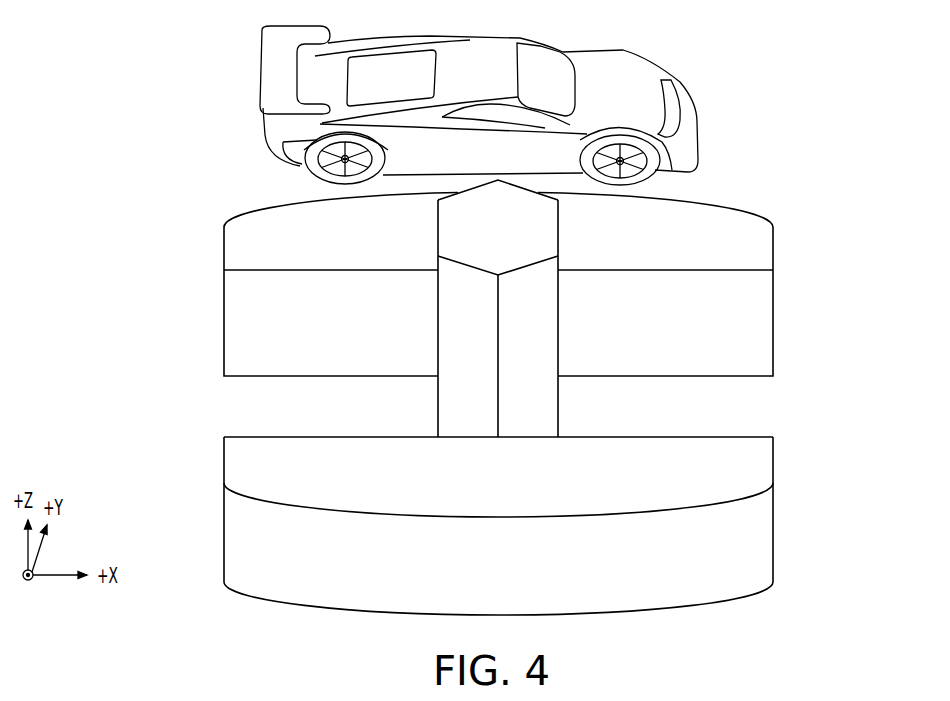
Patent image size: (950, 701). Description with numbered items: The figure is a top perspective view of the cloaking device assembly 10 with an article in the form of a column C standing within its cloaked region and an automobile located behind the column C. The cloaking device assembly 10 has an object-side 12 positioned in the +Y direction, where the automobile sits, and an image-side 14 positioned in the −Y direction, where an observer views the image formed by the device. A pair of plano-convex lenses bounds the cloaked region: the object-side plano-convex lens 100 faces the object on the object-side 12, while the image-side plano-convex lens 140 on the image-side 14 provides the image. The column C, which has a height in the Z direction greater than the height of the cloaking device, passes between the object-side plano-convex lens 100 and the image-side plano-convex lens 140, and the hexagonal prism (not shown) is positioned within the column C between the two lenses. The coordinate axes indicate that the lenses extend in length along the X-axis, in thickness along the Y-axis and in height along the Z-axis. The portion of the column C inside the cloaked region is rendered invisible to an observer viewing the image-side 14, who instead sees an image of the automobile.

The cloaking device assembly 10 is at (571, 105).
The object-side 12 is at (539, 105).
The image-side 14 is at (573, 421).
The object-side plano-convex lens 100 is at (571, 285).
The image-side plano-convex lens 140 is at (573, 526).
The column C is at (480, 340).